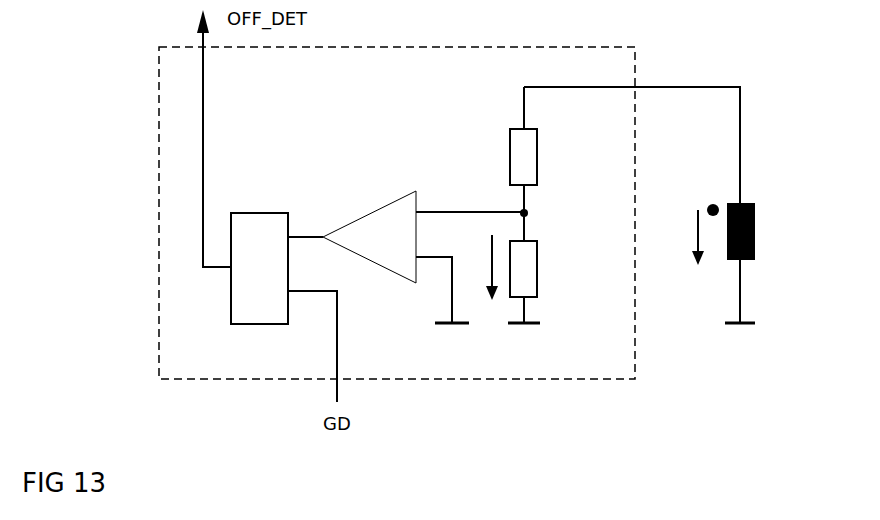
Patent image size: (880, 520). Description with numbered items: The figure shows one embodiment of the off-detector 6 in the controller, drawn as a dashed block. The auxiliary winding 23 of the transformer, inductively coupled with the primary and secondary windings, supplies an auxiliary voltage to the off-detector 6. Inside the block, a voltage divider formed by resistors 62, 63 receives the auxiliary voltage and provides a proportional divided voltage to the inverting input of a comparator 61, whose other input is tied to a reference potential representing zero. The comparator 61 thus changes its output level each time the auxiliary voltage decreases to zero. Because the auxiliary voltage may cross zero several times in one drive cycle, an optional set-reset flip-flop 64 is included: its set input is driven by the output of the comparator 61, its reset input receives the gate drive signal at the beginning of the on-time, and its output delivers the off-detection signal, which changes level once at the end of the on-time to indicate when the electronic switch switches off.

The off-detector 6 is at (525, 46).
The comparator 61 is at (392, 202).
The voltage divider resistor 62 is at (542, 157).
The voltage divider resistor 63 is at (542, 272).
The flip-flop 64 is at (256, 213).
The auxiliary winding 23 is at (728, 262).